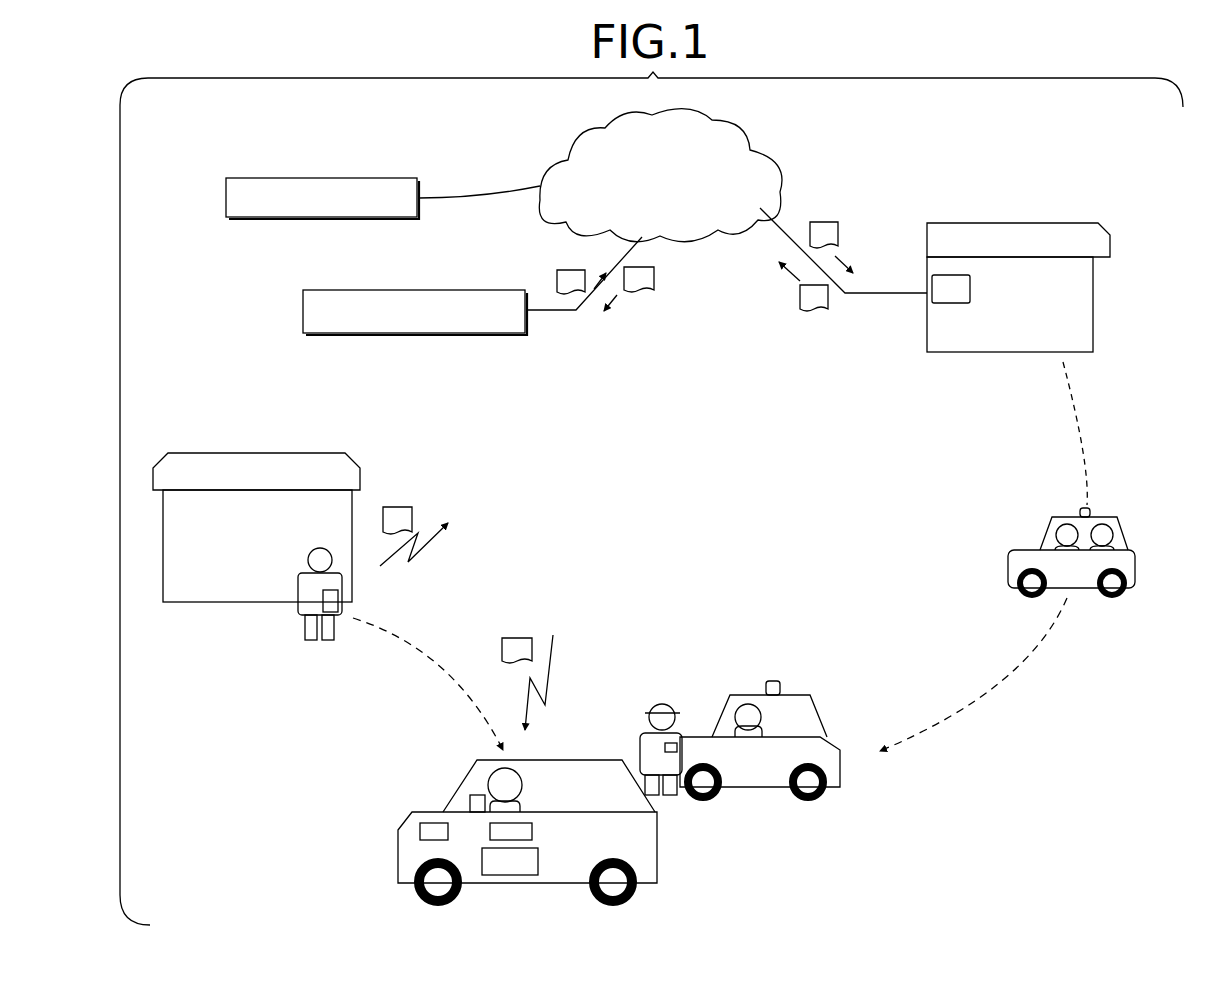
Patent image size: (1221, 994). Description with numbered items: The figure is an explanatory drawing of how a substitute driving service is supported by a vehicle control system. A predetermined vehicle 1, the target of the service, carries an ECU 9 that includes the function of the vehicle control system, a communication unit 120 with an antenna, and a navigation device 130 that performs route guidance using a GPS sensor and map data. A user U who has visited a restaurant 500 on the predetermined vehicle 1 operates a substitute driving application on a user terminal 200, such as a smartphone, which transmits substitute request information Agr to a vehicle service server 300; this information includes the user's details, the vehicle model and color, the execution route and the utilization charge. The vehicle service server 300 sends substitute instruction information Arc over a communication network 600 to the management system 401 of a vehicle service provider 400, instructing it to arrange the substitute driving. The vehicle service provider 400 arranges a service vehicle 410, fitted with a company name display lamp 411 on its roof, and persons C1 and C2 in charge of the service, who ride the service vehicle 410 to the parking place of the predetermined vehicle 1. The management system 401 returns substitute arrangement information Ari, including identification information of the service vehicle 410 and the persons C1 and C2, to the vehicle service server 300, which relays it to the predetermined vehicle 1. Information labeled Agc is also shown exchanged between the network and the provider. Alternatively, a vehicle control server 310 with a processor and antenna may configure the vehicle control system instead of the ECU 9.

The predetermined vehicle 1 is at (657, 857).
The ECU 9 is at (511, 875).
The communication unit 120 is at (532, 830).
The navigation device 130 is at (420, 831).
The user terminal 200 is at (345, 607).
The vehicle service server 300 is at (412, 290).
The vehicle control server 310 is at (327, 177).
The vehicle service provider 400 is at (1010, 222).
The management system 401 is at (970, 290).
The service vehicle 410 is at (818, 707).
The company name display lamp 411 is at (771, 680).
The restaurant 500 is at (262, 452).
The communication network 600 is at (766, 156).
The user U is at (308, 559).
The person in charge of the service C1 is at (662, 703).
The person in charge of the service C2 is at (750, 700).
The substitute instruction information Arc is at (579, 273).
The substitute arrangement information Ari is at (665, 496).
The service information Agc is at (829, 237).
The substitute request information Agr is at (414, 526).